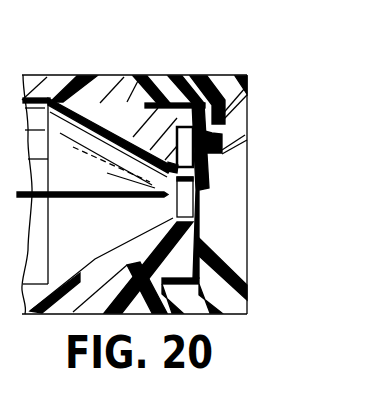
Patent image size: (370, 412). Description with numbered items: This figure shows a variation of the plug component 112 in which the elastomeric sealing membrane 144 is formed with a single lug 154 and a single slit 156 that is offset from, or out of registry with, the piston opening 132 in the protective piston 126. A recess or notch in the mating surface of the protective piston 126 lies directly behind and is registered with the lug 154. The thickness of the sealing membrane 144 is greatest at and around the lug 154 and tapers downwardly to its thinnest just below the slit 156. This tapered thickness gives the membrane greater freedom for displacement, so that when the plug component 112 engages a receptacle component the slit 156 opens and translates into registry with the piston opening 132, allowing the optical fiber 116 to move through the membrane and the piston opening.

The plug component 112 is at (67, 74).
The optical fiber 116 is at (96, 172).
The protective piston 126 is at (97, 150).
The piston opening 132 is at (185, 198).
The elastomeric sealing membrane 144 is at (232, 38).
The lug 154 is at (294, 138).
The slit 156 is at (201, 220).